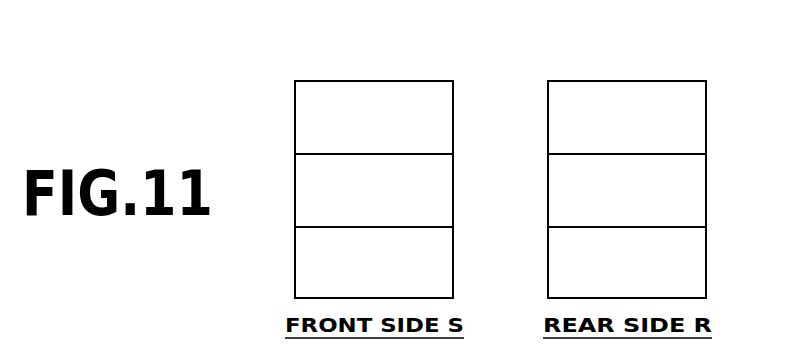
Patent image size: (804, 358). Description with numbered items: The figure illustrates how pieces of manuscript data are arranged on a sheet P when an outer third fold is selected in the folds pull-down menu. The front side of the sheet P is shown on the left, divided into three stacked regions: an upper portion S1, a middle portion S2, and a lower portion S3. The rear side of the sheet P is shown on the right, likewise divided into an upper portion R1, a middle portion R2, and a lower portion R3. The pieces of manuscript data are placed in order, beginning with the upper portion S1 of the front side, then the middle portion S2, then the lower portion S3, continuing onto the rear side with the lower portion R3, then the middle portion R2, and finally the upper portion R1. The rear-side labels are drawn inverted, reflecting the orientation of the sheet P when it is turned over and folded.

The sheet P is at (312, 74).
The upper portion of the front side S1 is at (443, 99).
The middle portion of the front side S2 is at (443, 171).
The lower portion of the front side S3 is at (443, 243).
The upper portion of the rear side R1 is at (696, 99).
The middle portion of the rear side R2 is at (696, 171).
The lower portion of the rear side R3 is at (696, 243).